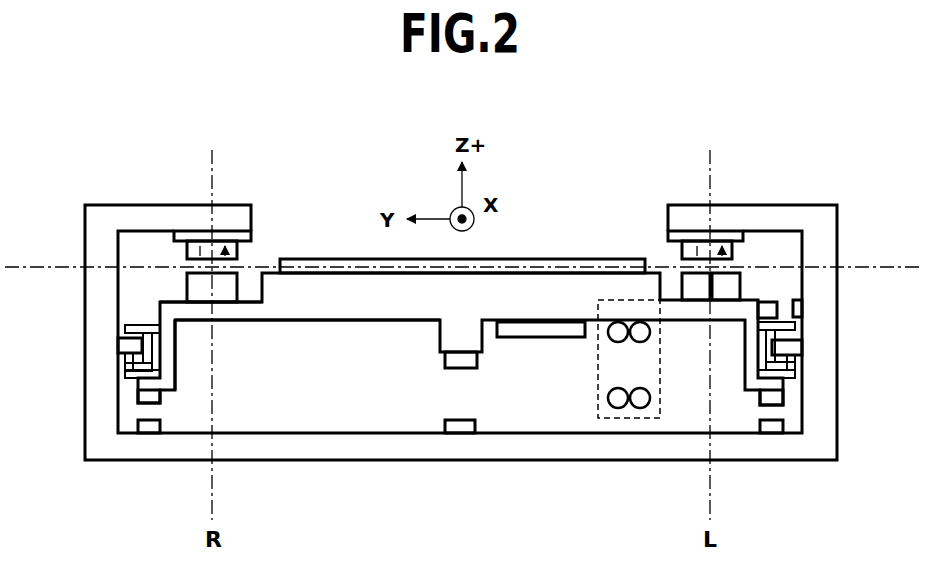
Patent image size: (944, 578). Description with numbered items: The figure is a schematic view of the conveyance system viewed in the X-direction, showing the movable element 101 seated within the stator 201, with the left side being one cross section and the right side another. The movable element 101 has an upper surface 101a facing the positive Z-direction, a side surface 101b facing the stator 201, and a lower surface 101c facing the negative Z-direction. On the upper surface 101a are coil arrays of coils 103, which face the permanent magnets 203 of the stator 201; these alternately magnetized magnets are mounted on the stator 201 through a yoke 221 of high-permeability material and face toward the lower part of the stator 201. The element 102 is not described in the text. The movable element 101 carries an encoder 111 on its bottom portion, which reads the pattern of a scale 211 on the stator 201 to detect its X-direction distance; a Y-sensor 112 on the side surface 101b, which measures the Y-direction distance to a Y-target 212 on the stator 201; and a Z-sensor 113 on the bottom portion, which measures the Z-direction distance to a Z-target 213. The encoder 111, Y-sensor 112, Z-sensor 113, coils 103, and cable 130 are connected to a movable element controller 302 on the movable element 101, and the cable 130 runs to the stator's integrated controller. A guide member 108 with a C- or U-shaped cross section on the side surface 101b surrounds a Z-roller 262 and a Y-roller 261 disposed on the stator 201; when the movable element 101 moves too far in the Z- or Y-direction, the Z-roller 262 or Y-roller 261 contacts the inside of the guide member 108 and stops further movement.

The stator 201 is at (137, 204).
The yoke 221 is at (229, 230).
The permanent magnets 203 is at (238, 248).
The coils 103 is at (237, 289).
The optical element (lens) 102 is at (362, 258).
The movable element 101 is at (356, 305).
The upper surface 101a is at (167, 298).
The side surface 101b is at (172, 314).
The lower surface 101c is at (307, 358).
The encoder 111 is at (455, 369).
The movable element controller 302 is at (540, 338).
The cable 130 is at (622, 403).
The Y-sensor 112 is at (777, 304).
The Y-target 212 is at (803, 308).
The Y-roller 261 is at (803, 347).
The Z-roller 262 is at (124, 348).
The guide member 108 is at (128, 366).
The Z-sensor 113 is at (140, 400).
The Z-target 213 is at (147, 434).
The scale 211 is at (460, 434).